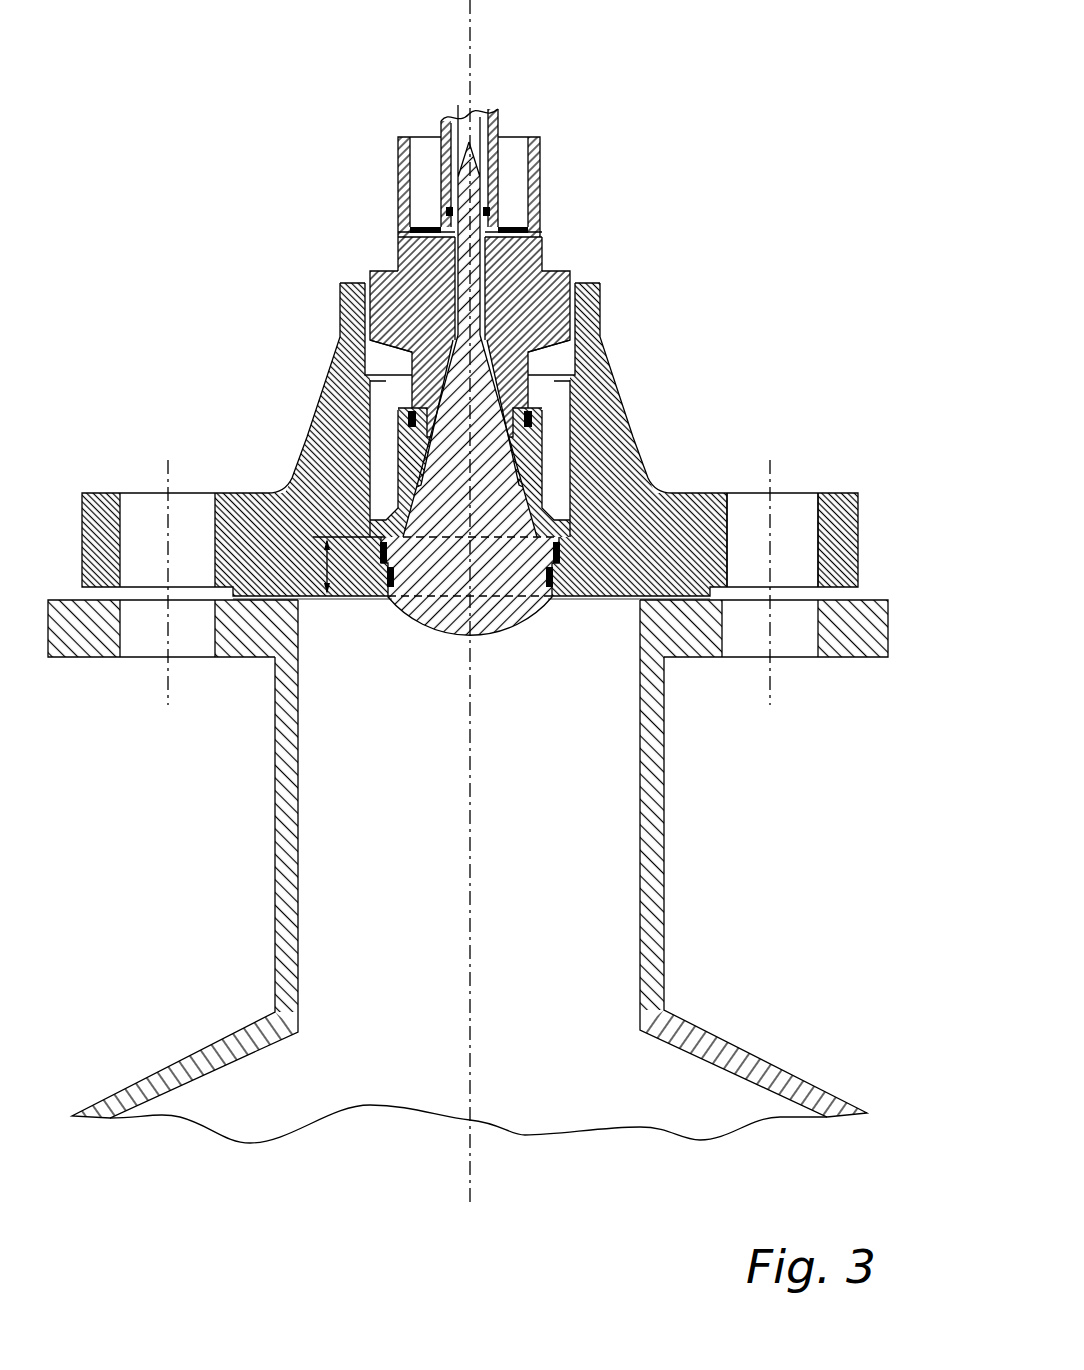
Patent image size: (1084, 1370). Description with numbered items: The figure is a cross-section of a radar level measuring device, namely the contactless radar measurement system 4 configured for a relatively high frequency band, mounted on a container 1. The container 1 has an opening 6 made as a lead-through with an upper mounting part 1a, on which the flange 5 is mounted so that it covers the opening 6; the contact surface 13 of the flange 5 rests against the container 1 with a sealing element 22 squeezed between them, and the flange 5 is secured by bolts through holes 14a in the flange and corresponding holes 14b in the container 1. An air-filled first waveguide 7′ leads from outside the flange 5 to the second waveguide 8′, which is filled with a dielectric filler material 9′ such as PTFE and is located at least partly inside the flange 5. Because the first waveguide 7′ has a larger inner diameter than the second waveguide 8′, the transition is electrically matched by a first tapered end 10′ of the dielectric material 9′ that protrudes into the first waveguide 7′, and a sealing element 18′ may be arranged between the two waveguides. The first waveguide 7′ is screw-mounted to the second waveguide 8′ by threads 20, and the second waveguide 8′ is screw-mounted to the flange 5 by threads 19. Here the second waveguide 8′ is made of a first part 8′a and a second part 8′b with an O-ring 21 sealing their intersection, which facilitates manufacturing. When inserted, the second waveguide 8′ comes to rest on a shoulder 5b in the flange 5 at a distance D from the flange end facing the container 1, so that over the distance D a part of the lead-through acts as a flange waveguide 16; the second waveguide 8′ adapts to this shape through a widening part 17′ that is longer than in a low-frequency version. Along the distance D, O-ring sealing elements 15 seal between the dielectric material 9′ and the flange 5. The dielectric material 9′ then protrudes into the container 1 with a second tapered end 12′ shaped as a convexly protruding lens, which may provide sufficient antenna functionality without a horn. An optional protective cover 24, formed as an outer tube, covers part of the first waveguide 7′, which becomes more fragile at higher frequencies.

The container 1 is at (193, 998).
The upper mounting part 1a is at (853, 643).
The contactless radar measurement system 4 is at (707, 107).
The flange 5 is at (615, 413).
The shoulder 5b is at (565, 495).
The opening 6 is at (392, 1068).
The first waveguide 7′ is at (498, 111).
The second waveguide 8′ is at (558, 271).
The first part 8′a is at (390, 270).
The second part 8′b is at (398, 453).
The dielectric filler material 9′ is at (545, 400).
The first tapered end 10′ is at (458, 122).
The second tapered end 12′ is at (504, 633).
The contact surface 13 is at (727, 547).
The holes 14a is at (187, 508).
The holes 14b is at (133, 655).
The sealing elements 15 is at (388, 552).
The flange waveguide 16 is at (576, 559).
The widening part 17′ is at (520, 390).
The sealing element 18′ is at (500, 212).
The threads 19 is at (362, 312).
The threads 20 is at (445, 210).
The O-ring 21 is at (398, 416).
The sealing element 22 is at (268, 598).
The protective cover 24 is at (397, 160).
The distance D is at (310, 566).